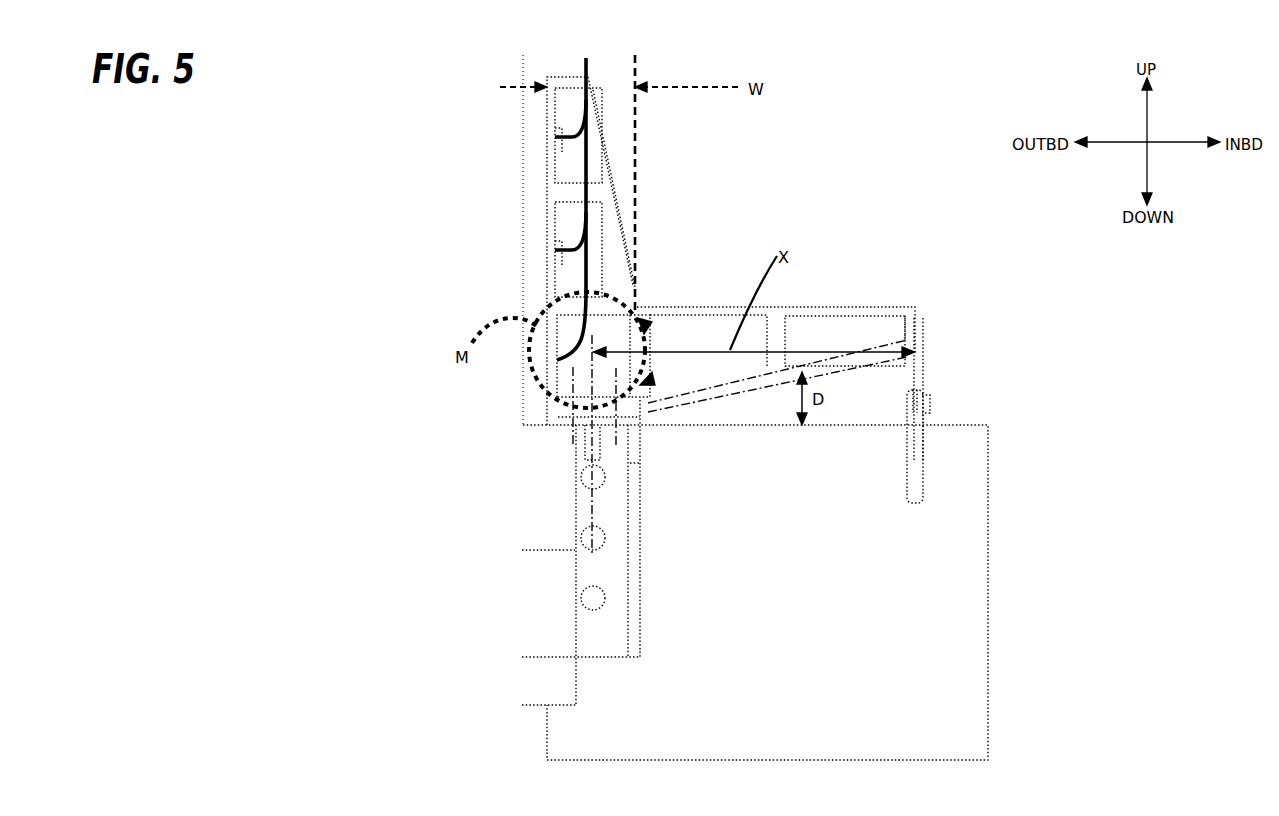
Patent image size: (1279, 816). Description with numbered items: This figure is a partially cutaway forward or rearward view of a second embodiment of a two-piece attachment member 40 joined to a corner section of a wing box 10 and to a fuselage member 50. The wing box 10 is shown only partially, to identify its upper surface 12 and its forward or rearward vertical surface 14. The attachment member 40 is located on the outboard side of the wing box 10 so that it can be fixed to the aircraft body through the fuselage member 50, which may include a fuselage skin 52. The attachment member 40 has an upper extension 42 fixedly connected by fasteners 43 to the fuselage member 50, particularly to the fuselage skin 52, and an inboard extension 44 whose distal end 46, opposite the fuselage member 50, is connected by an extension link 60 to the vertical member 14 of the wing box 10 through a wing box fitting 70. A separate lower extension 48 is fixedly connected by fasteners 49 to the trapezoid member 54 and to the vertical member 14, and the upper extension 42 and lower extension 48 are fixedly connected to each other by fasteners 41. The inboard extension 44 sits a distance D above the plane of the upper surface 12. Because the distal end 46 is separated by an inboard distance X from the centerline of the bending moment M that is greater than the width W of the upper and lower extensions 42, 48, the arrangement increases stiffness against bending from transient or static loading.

The wing box 10 is at (767, 592).
The upper surface 12 is at (977, 425).
The vertical surface 14 is at (658, 682).
The two-piece attachment member 40 is at (638, 318).
The fasteners 41 is at (618, 392).
The upper extension 42 is at (595, 143).
The fasteners 43 is at (574, 164).
The inboard extension 44 is at (773, 312).
The distal end 46 is at (907, 318).
The lower extension 48 is at (583, 643).
The fasteners 49 is at (587, 607).
The fuselage member 50 is at (460, 434).
The fuselage skin 52 is at (533, 227).
The trapezoid member 54 is at (537, 540).
The extension link 60 is at (915, 367).
The wing box fitting 70 is at (913, 452).